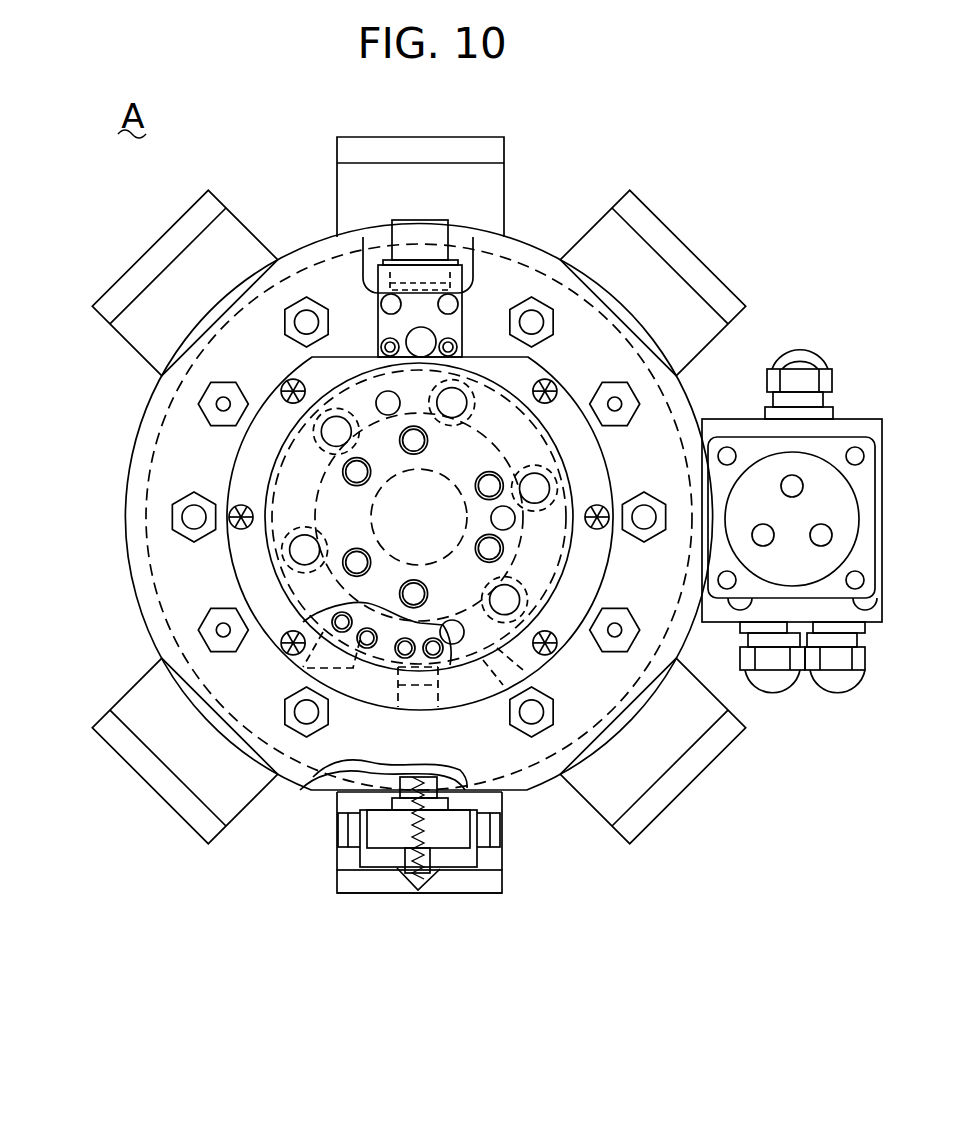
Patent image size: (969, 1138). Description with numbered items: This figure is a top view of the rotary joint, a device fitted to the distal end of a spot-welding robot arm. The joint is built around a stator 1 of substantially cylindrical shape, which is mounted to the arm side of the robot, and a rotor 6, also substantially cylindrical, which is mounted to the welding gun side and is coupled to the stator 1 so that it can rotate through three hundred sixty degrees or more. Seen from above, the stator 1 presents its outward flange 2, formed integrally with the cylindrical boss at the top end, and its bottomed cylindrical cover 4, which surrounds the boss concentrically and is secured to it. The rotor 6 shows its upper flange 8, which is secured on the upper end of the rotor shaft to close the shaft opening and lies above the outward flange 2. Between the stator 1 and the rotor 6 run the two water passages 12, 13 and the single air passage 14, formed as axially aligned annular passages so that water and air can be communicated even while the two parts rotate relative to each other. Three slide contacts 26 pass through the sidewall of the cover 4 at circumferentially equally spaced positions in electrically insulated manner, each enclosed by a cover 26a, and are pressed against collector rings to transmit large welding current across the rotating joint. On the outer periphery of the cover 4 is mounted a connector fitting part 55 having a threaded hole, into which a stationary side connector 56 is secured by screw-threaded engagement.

The stator 1 is at (121, 525).
The outward flange 2 is at (213, 470).
The cover 4 is at (132, 593).
The rotor 6 is at (481, 368).
The upper flange 8 is at (570, 482).
The water passage 12 is at (492, 650).
The water passage 13 is at (425, 705).
The air passage 14 is at (340, 645).
The slide contact 26 is at (410, 866).
The cover 26a is at (131, 766).
The connector fitting part 55 is at (464, 295).
The stationary side connector 56 is at (425, 220).